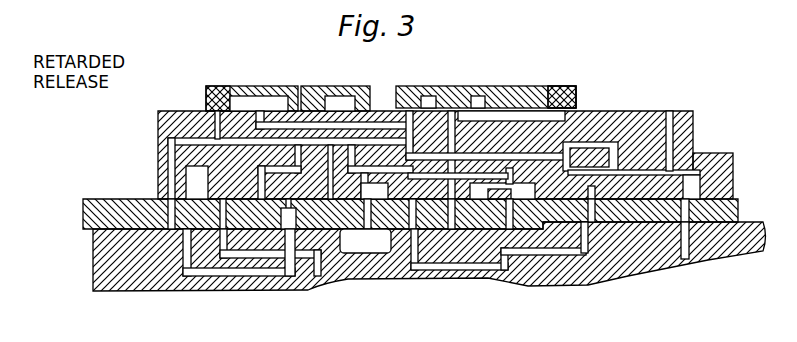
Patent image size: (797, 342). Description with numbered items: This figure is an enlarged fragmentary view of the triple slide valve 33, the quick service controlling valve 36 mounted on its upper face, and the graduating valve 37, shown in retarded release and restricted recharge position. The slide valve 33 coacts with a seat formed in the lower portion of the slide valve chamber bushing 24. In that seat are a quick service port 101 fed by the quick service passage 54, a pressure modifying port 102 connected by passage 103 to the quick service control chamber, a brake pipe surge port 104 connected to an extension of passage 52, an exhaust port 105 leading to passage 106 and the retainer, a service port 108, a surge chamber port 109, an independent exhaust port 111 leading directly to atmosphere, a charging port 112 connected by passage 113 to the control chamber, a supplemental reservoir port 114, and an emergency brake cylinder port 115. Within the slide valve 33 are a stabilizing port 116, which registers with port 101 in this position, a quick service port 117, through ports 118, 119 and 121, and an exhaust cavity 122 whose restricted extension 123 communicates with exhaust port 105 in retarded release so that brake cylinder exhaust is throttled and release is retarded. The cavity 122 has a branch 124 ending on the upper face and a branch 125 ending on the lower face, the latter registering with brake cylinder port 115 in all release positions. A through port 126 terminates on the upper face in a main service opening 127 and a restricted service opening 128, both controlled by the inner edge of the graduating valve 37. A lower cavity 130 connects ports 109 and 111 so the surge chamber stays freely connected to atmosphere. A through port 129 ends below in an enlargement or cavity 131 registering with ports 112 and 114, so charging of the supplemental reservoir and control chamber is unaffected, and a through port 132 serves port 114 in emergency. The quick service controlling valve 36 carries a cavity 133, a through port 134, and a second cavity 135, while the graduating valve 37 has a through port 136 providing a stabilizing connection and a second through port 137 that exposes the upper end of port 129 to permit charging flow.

The slide valve chamber bushing 24 is at (72, 197).
The triple slide valve 33 is at (150, 107).
The quick service controlling valve 36 is at (198, 82).
The graduating valve 37 is at (493, 78).
The passage 52 is at (108, 277).
The quick service passage 54 is at (178, 278).
The quick service port 101 is at (173, 227).
The pressure modifying port 102 is at (212, 223).
The passage 103 is at (350, 240).
The brake pipe surge port 104 is at (281, 223).
The exhaust port 105 is at (373, 238).
The passage 106 is at (352, 245).
The service port 108 is at (423, 267).
The surge chamber port 109 is at (467, 220).
The independent exhaust port 111 is at (517, 247).
The charging port 112 is at (590, 210).
The passage 113 is at (487, 243).
The supplemental reservoir port 114 is at (606, 183).
The emergency brake cylinder port 115 is at (675, 205).
The stabilizing port 116 is at (162, 134).
The quick service port 117 is at (187, 172).
The through port 118 is at (265, 77).
The through port 119 is at (325, 77).
The through port 121 is at (362, 82).
The exhaust cavity 122 is at (380, 237).
The restricted extension 123 is at (342, 247).
The branch 124 is at (257, 115).
The branch 125 is at (693, 165).
The through port 126 is at (443, 80).
The main service opening 127 is at (536, 80).
The restricted service opening 128 is at (553, 78).
The through port 129 is at (585, 140).
The cavity 130 is at (480, 240).
The cavity 131 is at (620, 193).
The through port 132 is at (660, 100).
The cavity 133 is at (227, 78).
The through port 134 is at (291, 112).
The second cavity 135 is at (337, 100).
The through port 136 is at (413, 86).
The second through port 137 is at (462, 85).